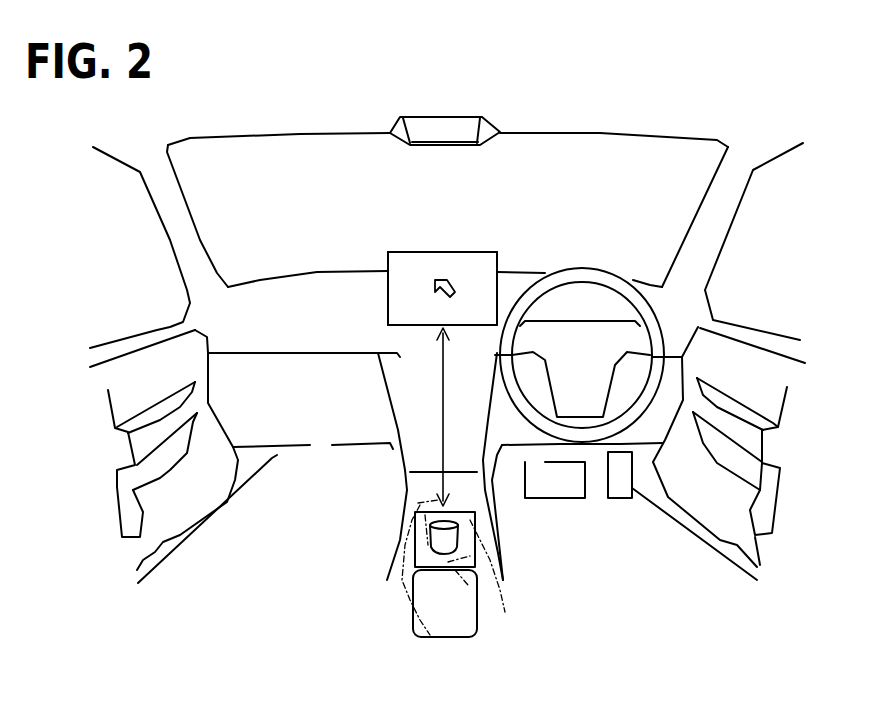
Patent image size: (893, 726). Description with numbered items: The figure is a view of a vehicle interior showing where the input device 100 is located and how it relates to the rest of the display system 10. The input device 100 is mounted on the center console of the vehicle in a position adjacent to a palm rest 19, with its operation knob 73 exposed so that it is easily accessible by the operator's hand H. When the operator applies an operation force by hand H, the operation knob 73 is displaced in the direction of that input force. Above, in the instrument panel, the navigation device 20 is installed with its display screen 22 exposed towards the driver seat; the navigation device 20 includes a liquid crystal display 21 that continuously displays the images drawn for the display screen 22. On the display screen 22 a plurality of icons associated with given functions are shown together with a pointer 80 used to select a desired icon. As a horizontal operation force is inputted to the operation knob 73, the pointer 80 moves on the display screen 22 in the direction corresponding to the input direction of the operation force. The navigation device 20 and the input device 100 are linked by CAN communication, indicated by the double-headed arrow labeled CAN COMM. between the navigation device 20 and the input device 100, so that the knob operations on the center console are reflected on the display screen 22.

The display system 10 is at (324, 477).
The navigation device 20 is at (388, 305).
The liquid crystal display 21 is at (453, 252).
The display screen 22 is at (408, 262).
The pointer 80 is at (445, 275).
The input device 100 is at (415, 537).
The operation knob 73 is at (458, 527).
The hand H is at (473, 547).
The palm rest 19 is at (413, 615).